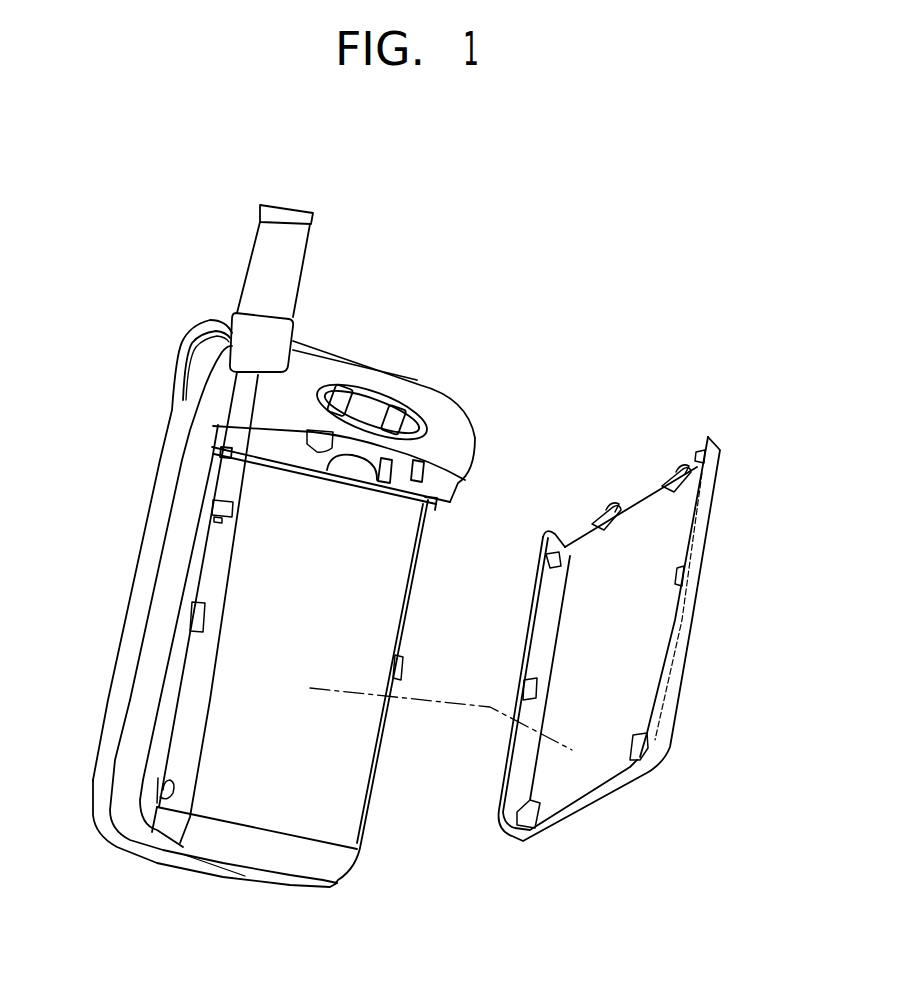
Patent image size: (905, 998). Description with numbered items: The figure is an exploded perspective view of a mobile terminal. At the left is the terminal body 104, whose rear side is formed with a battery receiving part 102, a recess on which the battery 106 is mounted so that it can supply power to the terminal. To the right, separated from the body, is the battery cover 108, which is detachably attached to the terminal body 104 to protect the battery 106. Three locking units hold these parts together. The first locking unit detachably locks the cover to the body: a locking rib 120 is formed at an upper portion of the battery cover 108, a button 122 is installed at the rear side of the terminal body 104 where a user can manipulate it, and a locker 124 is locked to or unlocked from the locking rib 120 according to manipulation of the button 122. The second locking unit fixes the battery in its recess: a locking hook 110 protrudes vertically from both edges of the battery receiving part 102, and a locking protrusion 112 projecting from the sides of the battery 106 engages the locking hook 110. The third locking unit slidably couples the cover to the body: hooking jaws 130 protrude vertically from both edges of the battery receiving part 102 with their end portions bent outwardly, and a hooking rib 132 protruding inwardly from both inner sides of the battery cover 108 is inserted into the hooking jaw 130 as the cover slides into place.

The battery receiving part 102 is at (157, 802).
The terminal body 104 is at (175, 437).
The battery 106 is at (365, 763).
The battery cover 108 is at (622, 622).
The locking hook 110 is at (213, 506).
The locking protrusion 112 is at (214, 519).
The locking rib 120 is at (604, 506).
The button 122 is at (370, 395).
The locker 124 is at (318, 440).
The hooking jaw 130 is at (196, 615).
The hooking rib 132 is at (523, 680).